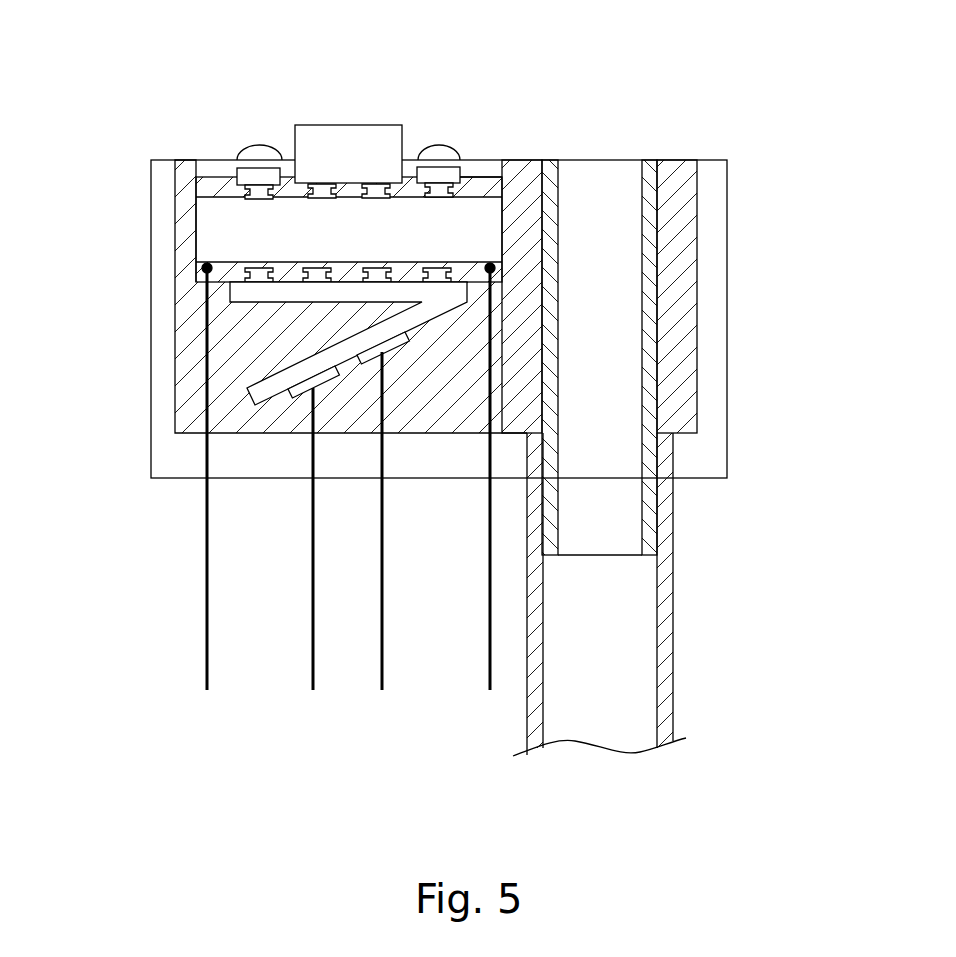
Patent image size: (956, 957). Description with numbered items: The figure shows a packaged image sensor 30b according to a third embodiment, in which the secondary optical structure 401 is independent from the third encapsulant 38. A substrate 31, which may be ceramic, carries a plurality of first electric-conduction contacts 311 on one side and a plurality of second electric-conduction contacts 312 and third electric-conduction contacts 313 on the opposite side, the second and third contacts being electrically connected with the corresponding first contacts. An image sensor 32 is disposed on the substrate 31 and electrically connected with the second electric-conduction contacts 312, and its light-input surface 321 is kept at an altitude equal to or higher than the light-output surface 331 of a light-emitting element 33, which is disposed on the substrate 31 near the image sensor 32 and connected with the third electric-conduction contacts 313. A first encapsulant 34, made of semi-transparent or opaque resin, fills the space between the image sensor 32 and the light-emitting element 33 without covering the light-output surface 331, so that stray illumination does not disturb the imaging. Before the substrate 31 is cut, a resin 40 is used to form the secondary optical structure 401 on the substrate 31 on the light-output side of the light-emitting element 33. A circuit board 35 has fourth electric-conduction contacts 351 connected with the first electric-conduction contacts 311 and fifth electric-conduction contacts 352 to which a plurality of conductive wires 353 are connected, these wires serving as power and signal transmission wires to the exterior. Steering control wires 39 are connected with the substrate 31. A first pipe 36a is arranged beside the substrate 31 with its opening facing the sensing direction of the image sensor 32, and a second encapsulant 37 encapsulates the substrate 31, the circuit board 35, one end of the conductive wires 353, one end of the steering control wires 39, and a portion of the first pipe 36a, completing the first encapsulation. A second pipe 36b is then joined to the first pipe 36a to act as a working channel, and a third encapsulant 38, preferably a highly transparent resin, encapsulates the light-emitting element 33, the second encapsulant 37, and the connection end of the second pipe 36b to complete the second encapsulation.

The packaged image sensor 30b is at (130, 92).
The substrate 31 is at (341, 220).
The first electric-conduction contacts 311 is at (248, 268).
The second electric-conduction contacts 312 is at (375, 190).
The third electric-conduction contacts 313 is at (207, 187).
The image sensor 32 is at (348, 115).
The light-input surface 321 is at (347, 116).
The light-emitting element 33 is at (261, 170).
The light-output surface 331 is at (438, 168).
The first encapsulant 34 is at (482, 185).
The circuit board 35 is at (268, 385).
The fourth electric-conduction contacts 351 is at (205, 274).
The fifth electric-conduction contacts 352 is at (395, 345).
The conductive wires 353 is at (313, 537).
The first pipe 36a is at (653, 252).
The second pipe 36b is at (675, 605).
The second encapsulant 37 is at (693, 293).
The third encapsulant 38 is at (712, 378).
The steering control wires 39 is at (286, 476).
The resin 40 is at (210, 163).
The secondary optical structure 401 is at (248, 170).